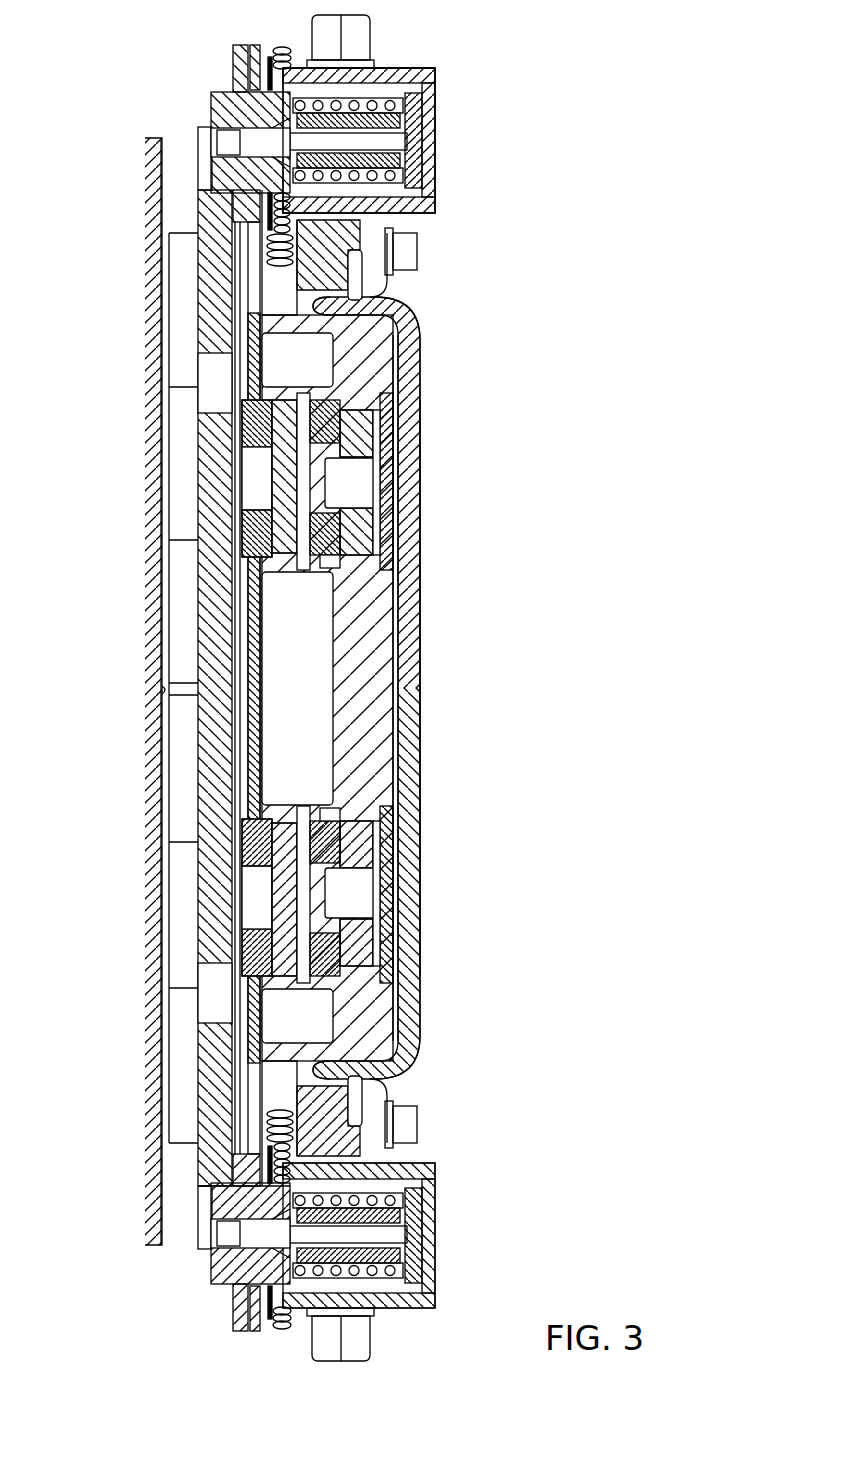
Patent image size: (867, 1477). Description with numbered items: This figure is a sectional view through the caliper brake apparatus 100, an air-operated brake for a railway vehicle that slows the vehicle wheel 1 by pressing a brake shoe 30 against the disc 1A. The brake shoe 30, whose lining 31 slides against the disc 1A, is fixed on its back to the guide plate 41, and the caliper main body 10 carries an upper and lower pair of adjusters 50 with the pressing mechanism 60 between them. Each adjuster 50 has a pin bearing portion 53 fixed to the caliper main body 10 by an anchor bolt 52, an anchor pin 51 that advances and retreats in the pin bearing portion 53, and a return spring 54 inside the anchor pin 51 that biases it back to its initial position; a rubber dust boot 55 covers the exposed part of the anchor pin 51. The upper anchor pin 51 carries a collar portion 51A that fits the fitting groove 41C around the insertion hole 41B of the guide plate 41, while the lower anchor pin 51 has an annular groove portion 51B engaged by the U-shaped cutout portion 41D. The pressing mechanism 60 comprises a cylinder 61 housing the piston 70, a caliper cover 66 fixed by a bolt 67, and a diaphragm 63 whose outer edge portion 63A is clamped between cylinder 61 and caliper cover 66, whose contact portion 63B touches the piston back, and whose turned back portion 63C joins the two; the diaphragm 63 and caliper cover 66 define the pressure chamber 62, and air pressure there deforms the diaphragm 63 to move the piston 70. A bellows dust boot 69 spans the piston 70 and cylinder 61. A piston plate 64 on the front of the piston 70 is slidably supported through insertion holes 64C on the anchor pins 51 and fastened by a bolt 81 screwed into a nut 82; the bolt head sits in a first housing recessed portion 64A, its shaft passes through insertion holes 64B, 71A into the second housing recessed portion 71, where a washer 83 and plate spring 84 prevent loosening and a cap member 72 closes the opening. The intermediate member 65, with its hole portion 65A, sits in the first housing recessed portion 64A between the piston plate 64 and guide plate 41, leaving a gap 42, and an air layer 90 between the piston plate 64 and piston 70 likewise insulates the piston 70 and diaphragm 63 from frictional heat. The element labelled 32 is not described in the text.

The vehicle wheel 1 is at (157, 200).
The disc 1A is at (168, 694).
The caliper main body 10 is at (458, 70).
The brake shoe 30 is at (172, 559).
The lining 31 is at (172, 622).
The protrusion 32 is at (215, 658).
The guide plate 41 is at (225, 772).
The insertion hole 41B is at (235, 205).
The fitting groove 41C is at (240, 222).
The cutout portion 41D is at (215, 1185).
The gap 42 is at (232, 588).
The adjuster 50 is at (441, 95).
The anchor pin 51 is at (220, 107).
The collar portion 51A is at (237, 77).
The annular groove portion 51B is at (237, 1298).
The anchor bolt 52 is at (358, 40).
The pin bearing portion 53 is at (425, 76).
The return spring 54 is at (410, 142).
The dust boot 55 is at (274, 56).
The pressing mechanism 60 is at (428, 359).
The cylinder 61 is at (372, 240).
The pressure chamber 62 is at (400, 707).
The diaphragm 63 is at (398, 747).
The outer edge portion 63A is at (362, 285).
The contact portion 63B is at (405, 781).
The turned back portion 63C is at (412, 303).
The piston plate 64 is at (255, 805).
The first housing recessed portion 64A is at (243, 405).
The insertion hole 64B is at (383, 482).
The insertion hole 64C is at (215, 137).
The intermediate member 65 is at (242, 425).
The hole portion 65A is at (245, 465).
The caliper cover 66 is at (412, 640).
The bolt 67 is at (420, 252).
The dust boot 69 is at (268, 285).
The piston 70 is at (373, 667).
The second housing recessed portion 71 is at (362, 417).
The insertion hole 71A is at (382, 512).
The cap member 72 is at (378, 462).
The bolt 81 is at (248, 535).
The nut 82 is at (352, 528).
The washer 83 is at (340, 545).
The plate spring 84 is at (325, 562).
The air layer 90 is at (300, 362).
The caliper brake apparatus 100 is at (593, 66).